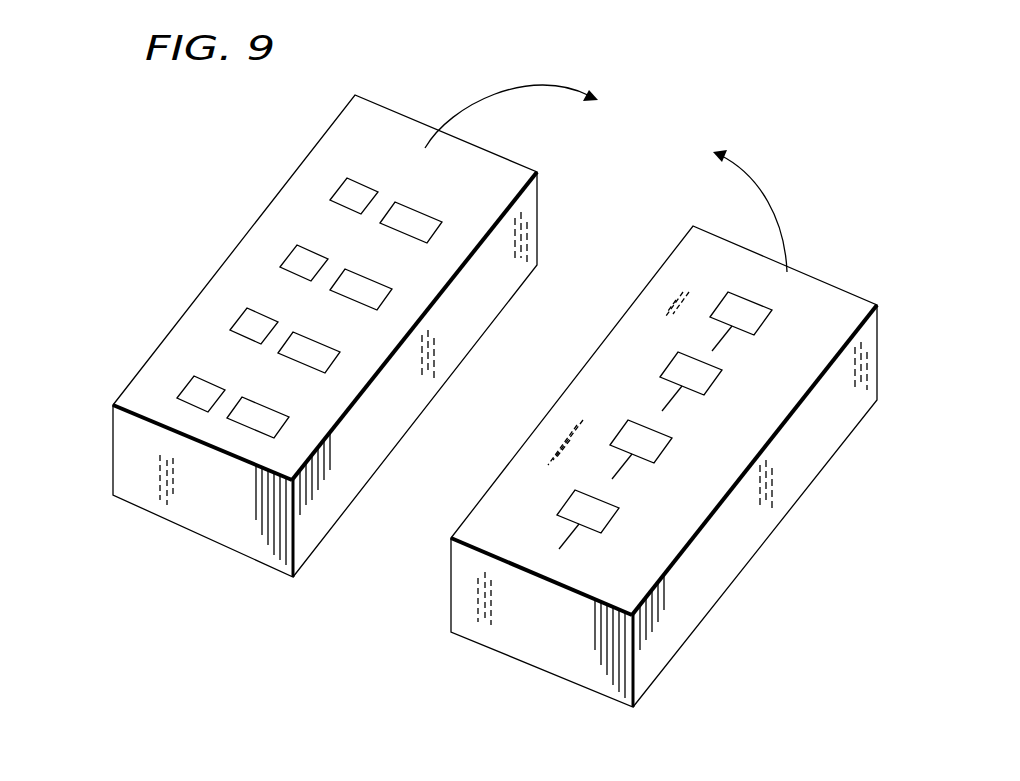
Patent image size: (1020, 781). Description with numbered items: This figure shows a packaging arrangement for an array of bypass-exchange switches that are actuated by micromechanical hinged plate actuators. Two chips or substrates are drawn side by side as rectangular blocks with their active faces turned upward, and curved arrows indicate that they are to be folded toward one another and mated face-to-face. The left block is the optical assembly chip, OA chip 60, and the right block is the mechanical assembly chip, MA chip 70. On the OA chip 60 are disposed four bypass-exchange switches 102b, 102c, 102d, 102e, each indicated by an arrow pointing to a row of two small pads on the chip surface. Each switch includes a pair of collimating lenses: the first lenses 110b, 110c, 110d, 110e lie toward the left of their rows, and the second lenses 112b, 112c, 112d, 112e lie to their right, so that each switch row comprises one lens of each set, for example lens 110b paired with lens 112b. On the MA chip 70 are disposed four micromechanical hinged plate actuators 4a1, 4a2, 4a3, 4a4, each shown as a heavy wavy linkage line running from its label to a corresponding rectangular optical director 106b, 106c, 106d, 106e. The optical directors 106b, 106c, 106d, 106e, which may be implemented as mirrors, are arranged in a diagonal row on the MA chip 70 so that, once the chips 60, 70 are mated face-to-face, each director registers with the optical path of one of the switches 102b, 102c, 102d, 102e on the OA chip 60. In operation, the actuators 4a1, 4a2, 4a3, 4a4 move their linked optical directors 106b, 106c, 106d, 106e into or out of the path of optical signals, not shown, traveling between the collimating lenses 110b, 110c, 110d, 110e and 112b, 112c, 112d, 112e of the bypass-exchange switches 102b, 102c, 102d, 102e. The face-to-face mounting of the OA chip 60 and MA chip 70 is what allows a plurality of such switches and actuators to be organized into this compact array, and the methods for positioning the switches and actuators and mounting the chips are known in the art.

The OA chip 60 is at (380, 141).
The MA chip 70 is at (834, 331).
The bypass-exchange switch 102b is at (150, 373).
The bypass-exchange switch 102c is at (205, 309).
The bypass-exchange switch 102d is at (255, 240).
The bypass-exchange switch 102e is at (305, 175).
The collimating lens 110b is at (197, 390).
The collimating lens 110c is at (250, 322).
The collimating lens 110d is at (298, 262).
The collimating lens 110e is at (347, 197).
The collimating lens 112b is at (275, 424).
The collimating lens 112c is at (327, 358).
The collimating lens 112d is at (379, 294).
The collimating lens 112e is at (431, 225).
The optical director 106b is at (559, 549).
The optical director 106c is at (612, 479).
The optical director 106d is at (662, 411).
The optical director 106e is at (712, 351).
The micromechanical hinged plate actuator 4a1 is at (566, 503).
The micromechanical hinged plate actuator 4a2 is at (619, 433).
The micromechanical hinged plate actuator 4a3 is at (669, 366).
The micromechanical hinged plate actuator 4a4 is at (719, 304).